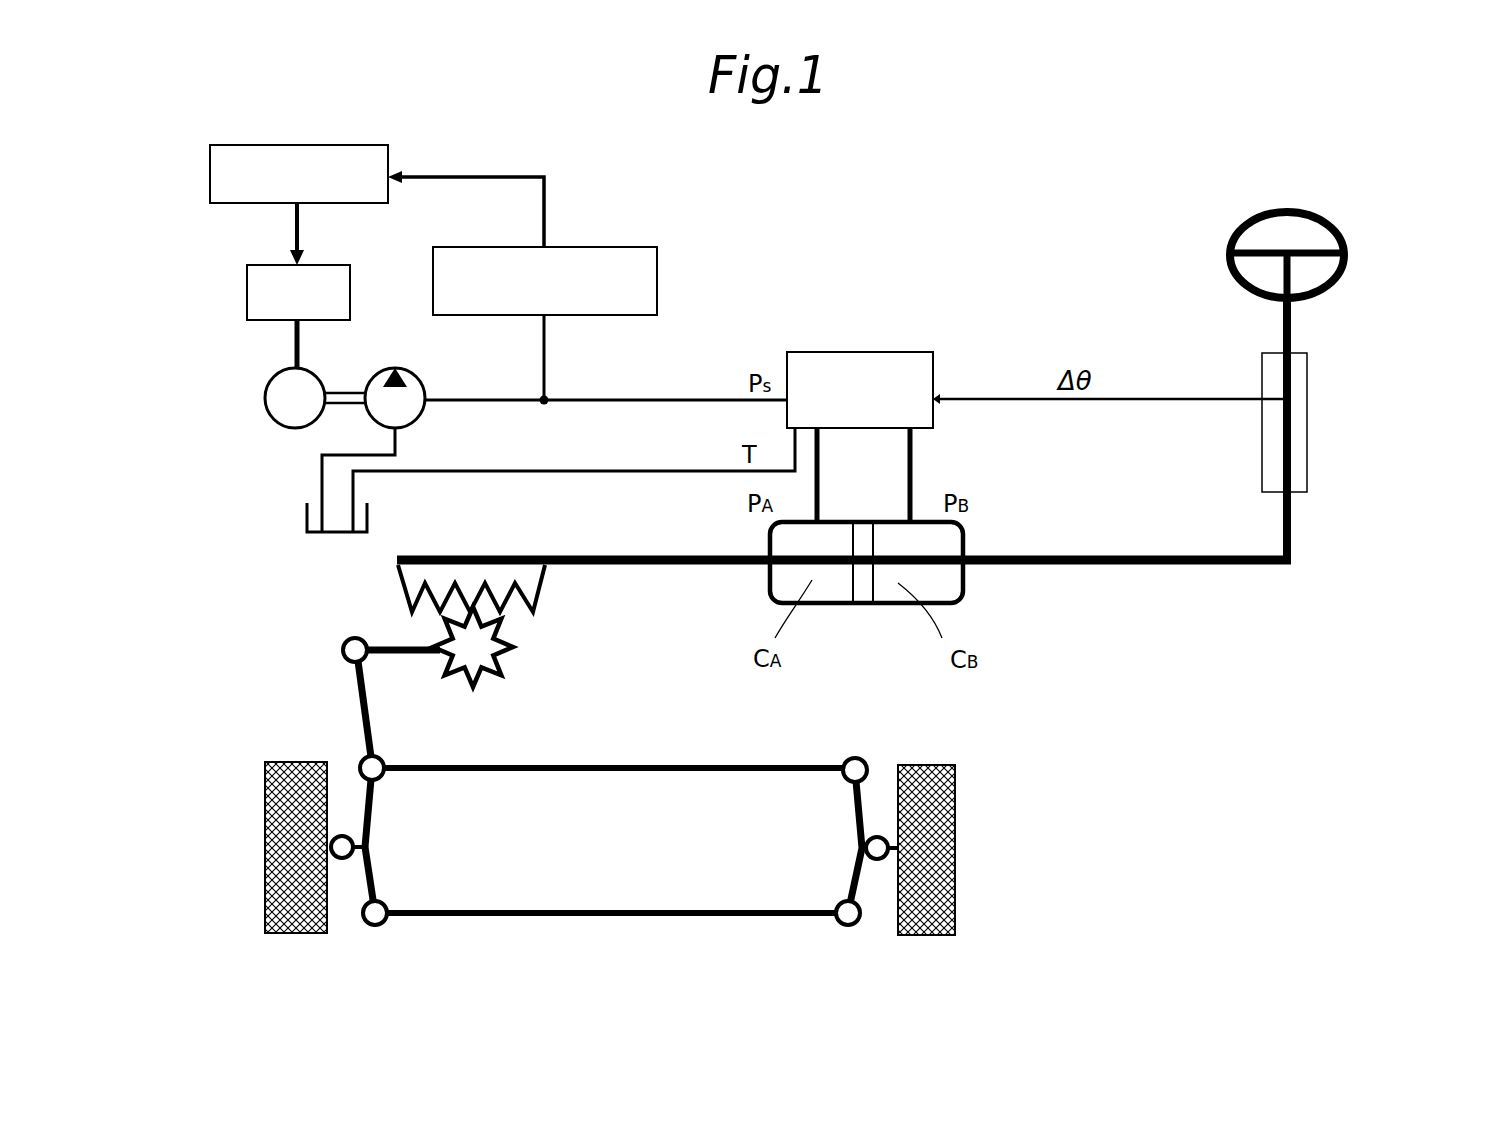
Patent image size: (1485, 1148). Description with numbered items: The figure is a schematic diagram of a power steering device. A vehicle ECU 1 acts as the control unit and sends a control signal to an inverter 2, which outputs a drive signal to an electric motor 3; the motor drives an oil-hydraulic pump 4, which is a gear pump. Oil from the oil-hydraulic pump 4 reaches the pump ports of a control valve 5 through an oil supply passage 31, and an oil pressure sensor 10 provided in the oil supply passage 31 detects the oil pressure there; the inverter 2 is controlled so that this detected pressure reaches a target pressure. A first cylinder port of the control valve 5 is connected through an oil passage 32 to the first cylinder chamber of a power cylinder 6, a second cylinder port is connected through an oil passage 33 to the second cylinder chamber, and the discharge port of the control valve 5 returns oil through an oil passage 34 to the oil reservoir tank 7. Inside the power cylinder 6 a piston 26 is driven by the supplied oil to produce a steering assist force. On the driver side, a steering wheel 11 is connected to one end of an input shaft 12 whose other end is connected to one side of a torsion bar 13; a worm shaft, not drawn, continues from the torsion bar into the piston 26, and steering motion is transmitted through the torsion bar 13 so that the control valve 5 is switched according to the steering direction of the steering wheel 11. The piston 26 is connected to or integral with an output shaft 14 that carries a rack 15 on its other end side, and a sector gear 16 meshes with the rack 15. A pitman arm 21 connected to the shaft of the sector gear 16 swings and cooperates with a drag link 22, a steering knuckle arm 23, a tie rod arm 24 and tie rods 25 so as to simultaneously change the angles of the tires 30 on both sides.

The vehicle ECU 1 is at (335, 145).
The inverter 2 is at (247, 288).
The electric motor 3 is at (265, 396).
The oil-hydraulic pump 4 is at (415, 368).
The control valve 5 is at (880, 352).
The power cylinder 6 is at (960, 590).
The oil reservoir tank 7 is at (305, 527).
The oil pressure sensor 10 is at (617, 247).
The steering wheel 11 is at (1320, 215).
The input shaft 12 is at (1291, 323).
The torsion bar 13 is at (1308, 435).
The output shaft 14 is at (663, 556).
The rack 15 is at (395, 568).
The sector gear 16 is at (510, 650).
The pitman arm 21 is at (402, 660).
The drag link 22 is at (363, 700).
The steering knuckle arm 23 is at (375, 808).
The tie rod arm 24 is at (378, 877).
The tie rods 25 is at (620, 768).
The piston 26 is at (858, 592).
The tires 30 is at (265, 847).
The oil supply passage 31 is at (637, 398).
The oil passage 32 is at (820, 472).
The oil passage 33 is at (913, 468).
The oil passage 34 is at (593, 468).